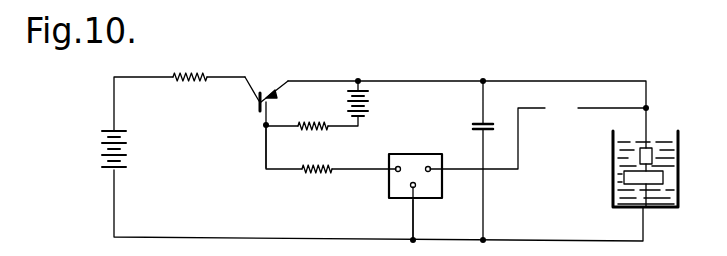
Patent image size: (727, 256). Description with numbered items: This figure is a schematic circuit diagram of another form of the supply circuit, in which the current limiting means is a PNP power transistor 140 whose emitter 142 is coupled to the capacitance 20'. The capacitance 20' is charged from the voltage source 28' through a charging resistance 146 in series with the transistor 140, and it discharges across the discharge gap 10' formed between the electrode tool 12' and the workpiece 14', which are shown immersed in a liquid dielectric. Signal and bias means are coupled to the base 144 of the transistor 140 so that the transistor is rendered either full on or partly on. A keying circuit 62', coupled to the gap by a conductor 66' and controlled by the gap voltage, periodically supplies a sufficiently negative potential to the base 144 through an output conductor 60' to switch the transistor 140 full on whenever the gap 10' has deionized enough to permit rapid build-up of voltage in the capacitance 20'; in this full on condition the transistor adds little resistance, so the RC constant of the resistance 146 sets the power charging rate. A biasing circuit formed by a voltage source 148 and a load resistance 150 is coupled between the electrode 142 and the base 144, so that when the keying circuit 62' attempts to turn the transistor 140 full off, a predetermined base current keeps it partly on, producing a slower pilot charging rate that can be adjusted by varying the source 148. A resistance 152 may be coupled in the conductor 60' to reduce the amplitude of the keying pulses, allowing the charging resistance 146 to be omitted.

The charging resistance 146 is at (193, 78).
The PNP power transistor 140 is at (270, 91).
The transistor base 144 is at (257, 105).
The emitter 142 is at (283, 88).
The voltage source 148 is at (368, 104).
The load resistance 150 is at (322, 132).
The capacitance 20' is at (466, 112).
The keying circuit 62' is at (415, 164).
The voltage source 28' is at (92, 149).
The output conductor 60' is at (243, 149).
The resistance 152 is at (318, 177).
The conductor 66' is at (390, 219).
The discharge gap 10' is at (666, 169).
The electrode tool 12' is at (679, 153).
The workpiece 14' is at (671, 186).